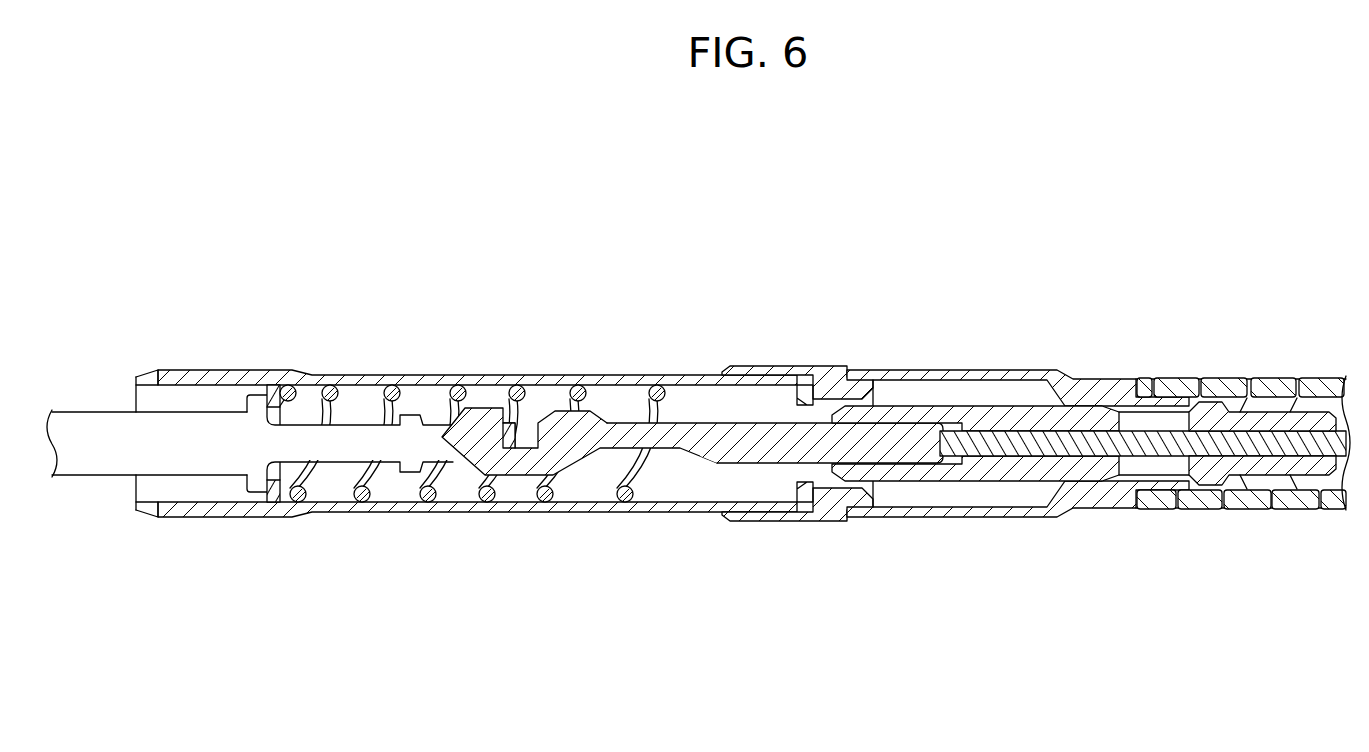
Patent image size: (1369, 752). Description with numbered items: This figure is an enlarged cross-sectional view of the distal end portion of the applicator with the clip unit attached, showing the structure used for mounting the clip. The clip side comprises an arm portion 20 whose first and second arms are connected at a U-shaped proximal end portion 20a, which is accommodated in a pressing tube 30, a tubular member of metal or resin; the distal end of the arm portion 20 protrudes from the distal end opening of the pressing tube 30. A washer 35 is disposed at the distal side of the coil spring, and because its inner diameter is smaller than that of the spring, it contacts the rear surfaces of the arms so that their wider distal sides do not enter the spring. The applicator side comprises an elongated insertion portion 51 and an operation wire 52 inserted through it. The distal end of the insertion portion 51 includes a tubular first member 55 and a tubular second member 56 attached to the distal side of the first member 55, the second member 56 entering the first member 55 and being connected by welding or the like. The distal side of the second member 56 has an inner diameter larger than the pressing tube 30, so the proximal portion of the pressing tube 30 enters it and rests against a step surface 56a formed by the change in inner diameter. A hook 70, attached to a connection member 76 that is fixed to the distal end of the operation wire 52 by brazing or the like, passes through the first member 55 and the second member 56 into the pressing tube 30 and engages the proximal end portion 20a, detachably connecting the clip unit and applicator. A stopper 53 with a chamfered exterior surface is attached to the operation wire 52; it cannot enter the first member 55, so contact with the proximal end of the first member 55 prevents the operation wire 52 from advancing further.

The arm portion 20 is at (191, 400).
The proximal end portion 20a is at (428, 408).
The pressing tube 30 is at (258, 376).
The washer 35 is at (275, 498).
The hook 70 is at (583, 472).
The second member 56 is at (830, 372).
The step surface 56a is at (808, 508).
The connection member 76 is at (923, 474).
The first member 55 is at (1097, 383).
The insertion portion 51 is at (1112, 525).
The operation wire 52 is at (1276, 437).
The stopper 53 is at (1296, 470).